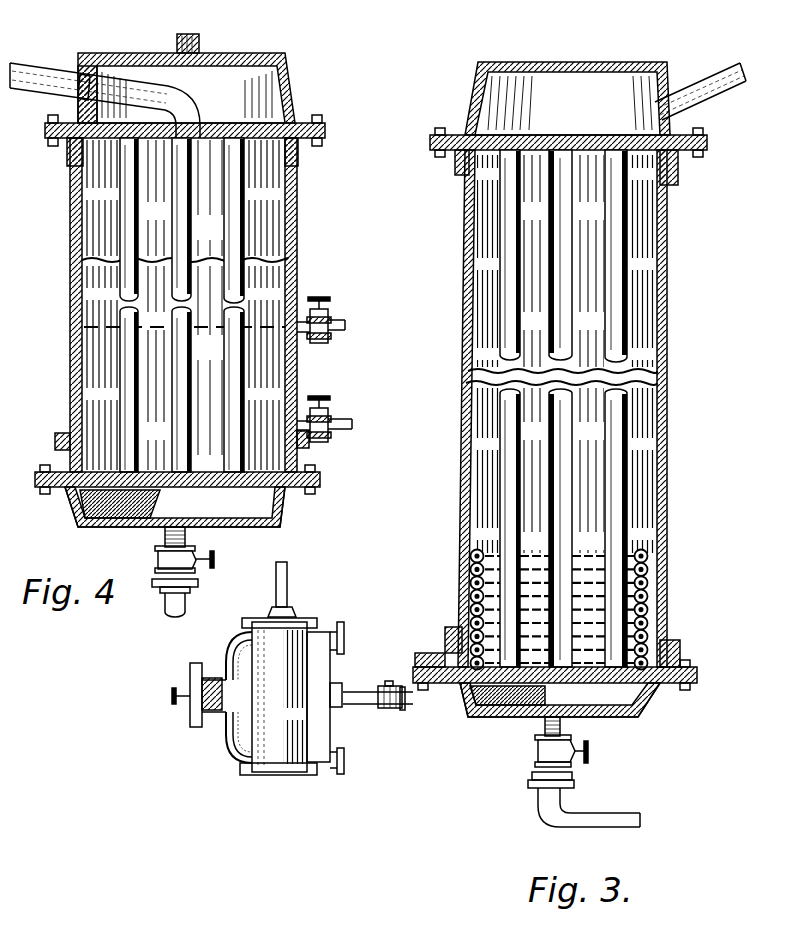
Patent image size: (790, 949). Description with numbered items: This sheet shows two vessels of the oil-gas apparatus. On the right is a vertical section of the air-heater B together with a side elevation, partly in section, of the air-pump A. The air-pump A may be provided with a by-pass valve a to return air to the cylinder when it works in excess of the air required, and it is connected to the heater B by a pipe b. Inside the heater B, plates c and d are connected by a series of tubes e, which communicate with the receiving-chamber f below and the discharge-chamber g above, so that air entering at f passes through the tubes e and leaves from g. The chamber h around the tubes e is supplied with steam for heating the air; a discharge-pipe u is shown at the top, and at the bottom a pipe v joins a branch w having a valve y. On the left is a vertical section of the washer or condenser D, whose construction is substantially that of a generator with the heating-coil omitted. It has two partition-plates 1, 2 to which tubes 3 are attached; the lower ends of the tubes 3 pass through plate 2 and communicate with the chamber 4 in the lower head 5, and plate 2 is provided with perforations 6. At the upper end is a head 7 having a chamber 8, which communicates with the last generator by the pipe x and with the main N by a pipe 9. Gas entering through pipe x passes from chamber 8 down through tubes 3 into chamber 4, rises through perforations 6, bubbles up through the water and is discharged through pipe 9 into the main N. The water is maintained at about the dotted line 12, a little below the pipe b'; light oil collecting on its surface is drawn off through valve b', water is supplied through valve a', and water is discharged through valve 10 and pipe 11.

In FIG. 4, the main N is at (40, 67).
In FIG. 4, the pipe x is at (183, 36).
In FIG. 4, the head 7 is at (232, 62).
In FIG. 4, the chamber 8 is at (273, 86).
In FIG. 4, the pipe 9 is at (128, 66).
In FIG. 4, the partition-plate 1 is at (216, 140).
In FIG. 4, the washer or condenser D is at (298, 234).
In FIG. 4, the tubes 3 is at (178, 208).
In FIG. 4, the dotted line 12 is at (283, 331).
In FIG. 4, the valve b' is at (324, 320).
In FIG. 4, the valve a' is at (324, 419).
In FIG. 4, the perforations 6 is at (97, 472).
In FIG. 4, the partition-plate 2 is at (190, 472).
In FIG. 4, the chamber 4 is at (70, 499).
In FIG. 4, the head 5 is at (77, 509).
In FIG. 4, the valve 10 is at (157, 558).
In FIG. 4, the pipe 11 is at (186, 602).
In FIG. 3, the discharge-chamber g is at (567, 98).
In FIG. 3, the discharge-pipe u is at (701, 80).
In FIG. 3, the plate d is at (588, 152).
In FIG. 3, the air-heater B is at (660, 514).
In FIG. 3, the tubes e is at (500, 525).
In FIG. 3, the chamber h is at (603, 345).
In FIG. 3, the plate c is at (555, 664).
In FIG. 3, the receiving-chamber f is at (600, 705).
In FIG. 3, the branch w is at (534, 753).
In FIG. 3, the valve y is at (556, 799).
In FIG. 3, the pipe v is at (606, 808).
In FIG. 3, the pipe b is at (384, 711).
In FIG. 3, the by-pass valve a is at (185, 695).
In FIG. 3, the air-pump A is at (285, 668).